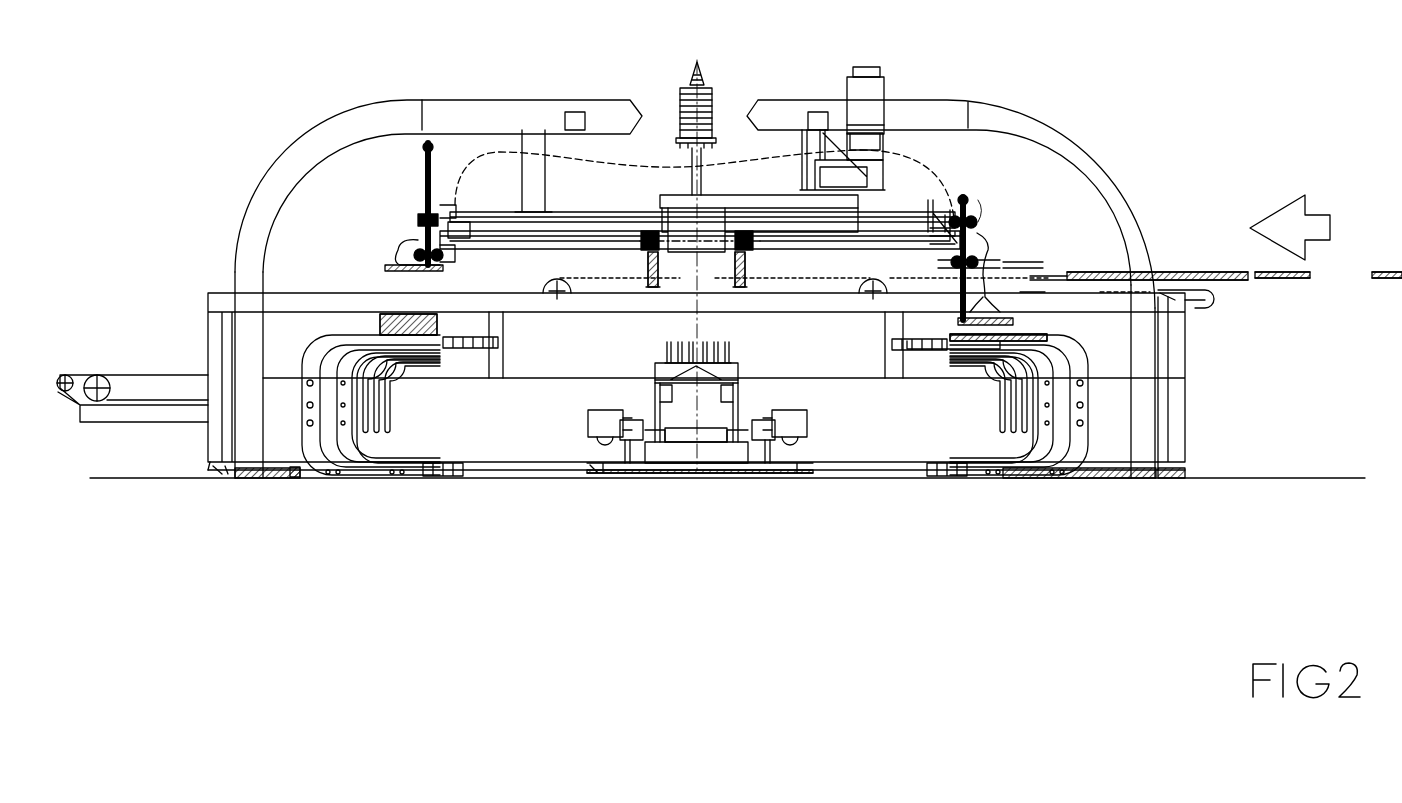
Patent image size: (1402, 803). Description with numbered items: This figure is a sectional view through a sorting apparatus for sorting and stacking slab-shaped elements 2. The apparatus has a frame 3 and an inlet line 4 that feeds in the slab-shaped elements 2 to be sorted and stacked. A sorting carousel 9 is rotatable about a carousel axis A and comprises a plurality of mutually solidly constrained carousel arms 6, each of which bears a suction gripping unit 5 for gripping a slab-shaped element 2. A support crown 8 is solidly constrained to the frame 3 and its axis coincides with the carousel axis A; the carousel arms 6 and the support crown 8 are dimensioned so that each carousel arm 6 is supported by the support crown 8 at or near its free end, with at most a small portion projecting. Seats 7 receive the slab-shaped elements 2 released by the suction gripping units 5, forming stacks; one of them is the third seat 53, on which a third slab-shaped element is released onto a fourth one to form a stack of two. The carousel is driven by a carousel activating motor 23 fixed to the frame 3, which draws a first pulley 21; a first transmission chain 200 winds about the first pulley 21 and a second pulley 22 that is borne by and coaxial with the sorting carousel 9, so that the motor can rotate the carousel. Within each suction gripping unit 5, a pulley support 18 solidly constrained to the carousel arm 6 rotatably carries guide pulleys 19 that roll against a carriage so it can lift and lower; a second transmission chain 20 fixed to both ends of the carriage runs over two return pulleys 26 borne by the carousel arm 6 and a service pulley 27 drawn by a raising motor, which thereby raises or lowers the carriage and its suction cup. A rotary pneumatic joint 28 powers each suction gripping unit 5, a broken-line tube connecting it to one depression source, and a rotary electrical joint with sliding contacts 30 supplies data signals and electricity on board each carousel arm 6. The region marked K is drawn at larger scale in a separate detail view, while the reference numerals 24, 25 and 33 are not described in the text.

The slab-shaped elements 2 is at (1390, 275).
The frame 3 is at (366, 100).
The inlet line 4 is at (1190, 252).
The suction gripping unit 5 is at (362, 163).
The carousel arm 6 is at (470, 184).
The seats 7 is at (473, 411).
The support crown 8 is at (500, 212).
The sorting carousel 9 is at (606, 150).
The pulley support 18 is at (636, 255).
The guide pulleys 19 is at (744, 251).
The second transmission chain 20 is at (700, 256).
The first pulley 21 is at (796, 215).
The second pulley 22 is at (680, 160).
The carousel activating motor 23 is at (806, 172).
The support leg 24 is at (812, 256).
The sensor 25 is at (556, 178).
The return pulleys 26 is at (936, 186).
The service pulley 27 is at (655, 206).
The rotary pneumatic joint 28 is at (690, 170).
The rotary electrical joint with sliding contacts 30 is at (717, 75).
The rail end support 33 is at (1020, 213).
The third seat 53 is at (943, 373).
The first transmission chain 200 is at (740, 200).
The carousel axis A is at (712, 80).
The direction K is at (996, 178).